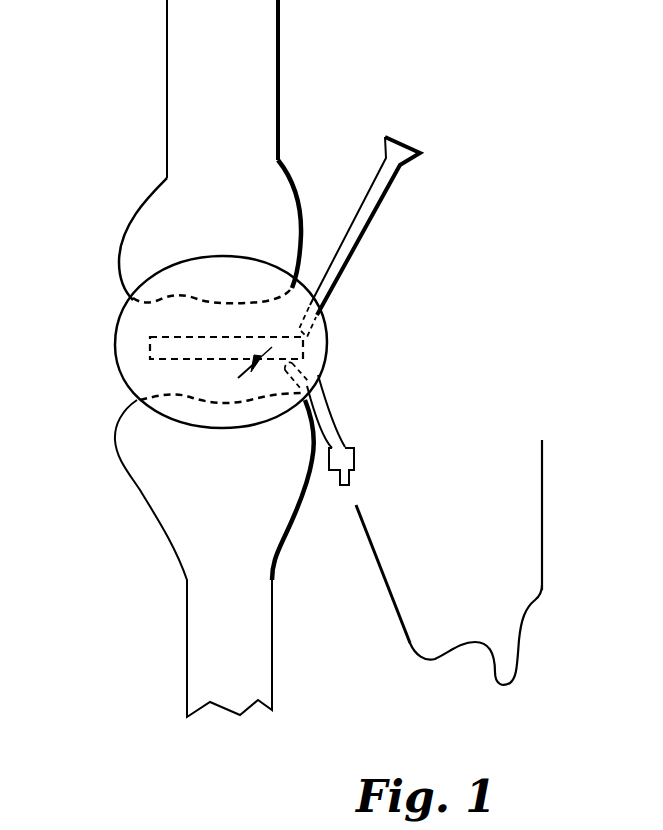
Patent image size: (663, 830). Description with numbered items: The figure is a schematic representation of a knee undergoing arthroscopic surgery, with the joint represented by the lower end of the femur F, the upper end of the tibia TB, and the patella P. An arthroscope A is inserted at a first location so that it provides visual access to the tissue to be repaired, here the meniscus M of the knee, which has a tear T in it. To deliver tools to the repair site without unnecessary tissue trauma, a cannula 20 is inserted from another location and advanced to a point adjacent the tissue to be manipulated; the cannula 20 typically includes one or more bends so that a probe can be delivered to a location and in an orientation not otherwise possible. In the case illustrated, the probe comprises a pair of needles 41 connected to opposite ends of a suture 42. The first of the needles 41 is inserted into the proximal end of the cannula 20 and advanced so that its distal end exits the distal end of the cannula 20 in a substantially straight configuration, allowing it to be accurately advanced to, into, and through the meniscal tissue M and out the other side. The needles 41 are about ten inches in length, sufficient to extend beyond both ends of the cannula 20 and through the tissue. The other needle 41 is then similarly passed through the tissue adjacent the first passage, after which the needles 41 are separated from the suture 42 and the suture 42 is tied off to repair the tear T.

The femur F is at (167, 114).
The tibia TB is at (187, 643).
The patella P is at (117, 342).
The meniscus M is at (152, 358).
The tear T is at (244, 374).
The arthroscope A is at (390, 193).
The cannula 20 is at (340, 420).
The needles 41 is at (385, 563).
The suture 42 is at (517, 683).